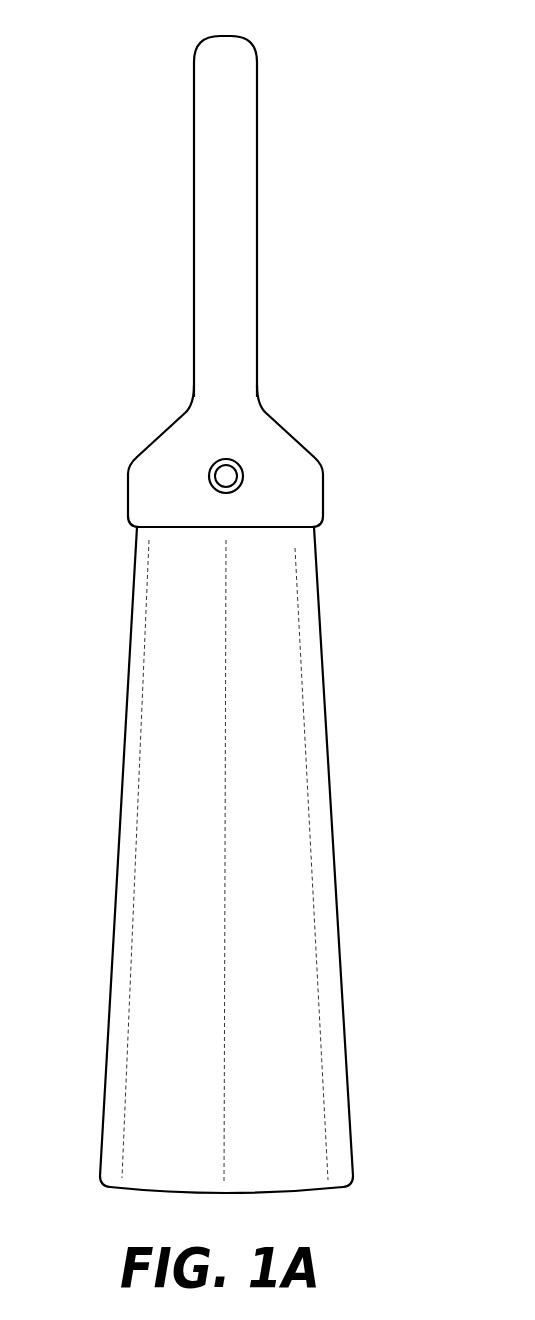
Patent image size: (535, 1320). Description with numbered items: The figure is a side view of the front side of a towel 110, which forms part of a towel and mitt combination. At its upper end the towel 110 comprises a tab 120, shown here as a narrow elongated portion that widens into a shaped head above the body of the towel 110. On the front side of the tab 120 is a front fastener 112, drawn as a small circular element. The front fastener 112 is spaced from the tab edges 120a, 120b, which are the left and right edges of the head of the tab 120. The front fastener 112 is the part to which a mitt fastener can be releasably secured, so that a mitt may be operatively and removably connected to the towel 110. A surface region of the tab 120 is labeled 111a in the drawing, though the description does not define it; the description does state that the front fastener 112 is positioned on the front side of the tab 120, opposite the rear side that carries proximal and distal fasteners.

The towel 110 is at (336, 38).
The stem surface 111a is at (215, 160).
The tab 120 is at (220, 365).
The tab edge 120a is at (128, 490).
The tab edge 120b is at (323, 495).
The front fastener 112 is at (218, 460).